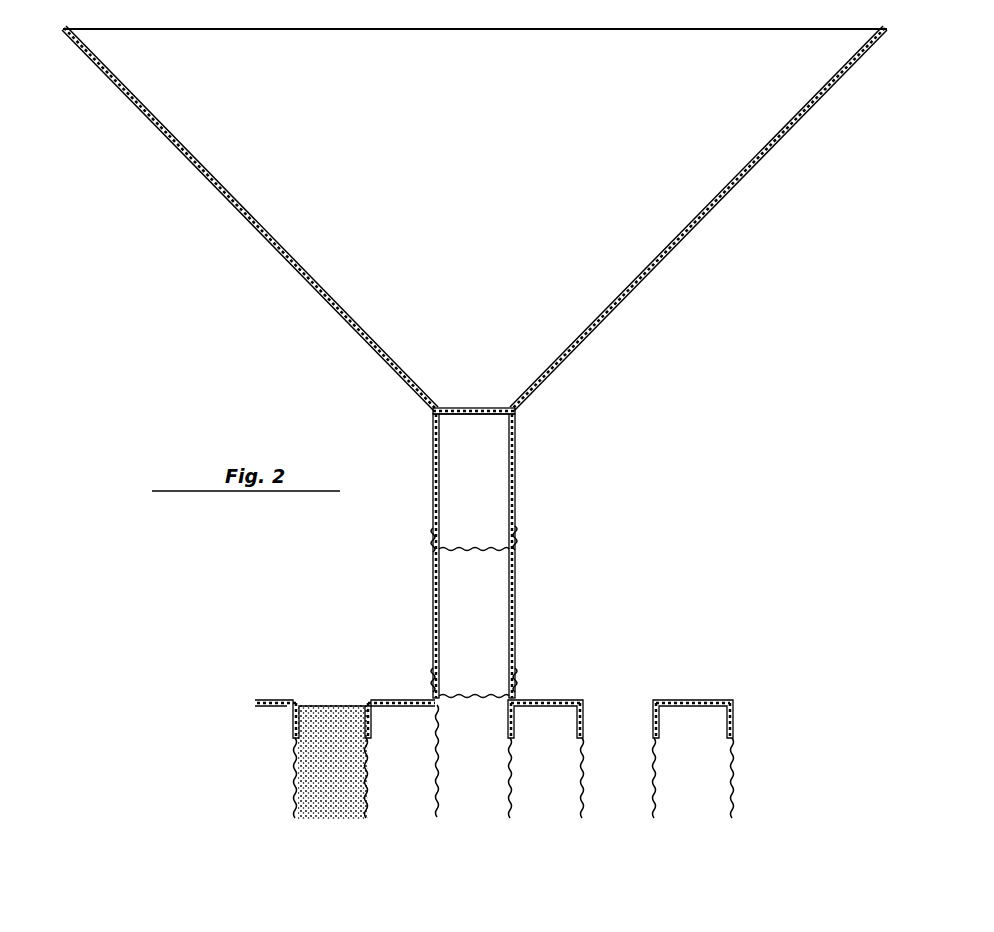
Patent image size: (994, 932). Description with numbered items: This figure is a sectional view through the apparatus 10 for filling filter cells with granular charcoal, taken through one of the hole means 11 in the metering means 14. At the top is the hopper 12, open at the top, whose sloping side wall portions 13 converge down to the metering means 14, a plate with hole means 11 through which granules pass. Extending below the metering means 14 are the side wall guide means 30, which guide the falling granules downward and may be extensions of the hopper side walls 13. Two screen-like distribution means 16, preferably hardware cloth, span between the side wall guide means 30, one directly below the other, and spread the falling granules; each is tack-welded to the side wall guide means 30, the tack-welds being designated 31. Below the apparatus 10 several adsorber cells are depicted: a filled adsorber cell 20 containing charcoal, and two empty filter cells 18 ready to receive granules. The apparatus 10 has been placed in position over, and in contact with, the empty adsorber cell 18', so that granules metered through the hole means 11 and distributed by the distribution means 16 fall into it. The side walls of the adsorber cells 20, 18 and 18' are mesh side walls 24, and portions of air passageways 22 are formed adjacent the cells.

The apparatus 10 is at (233, 207).
The hole means 11 is at (472, 406).
The hopper 12 is at (637, 215).
The side wall portions 13 is at (300, 275).
The metering means 14 is at (500, 406).
The distribution means 16 is at (466, 546).
The empty filter cells 18 is at (680, 691).
The empty adsorber cell 18' is at (473, 748).
The filled adsorber cell 20 is at (328, 712).
The air passageways 22 is at (272, 722).
The mesh side walls 24 is at (294, 768).
The side wall guide means 30 is at (432, 465).
The tack-welds 31 is at (432, 540).